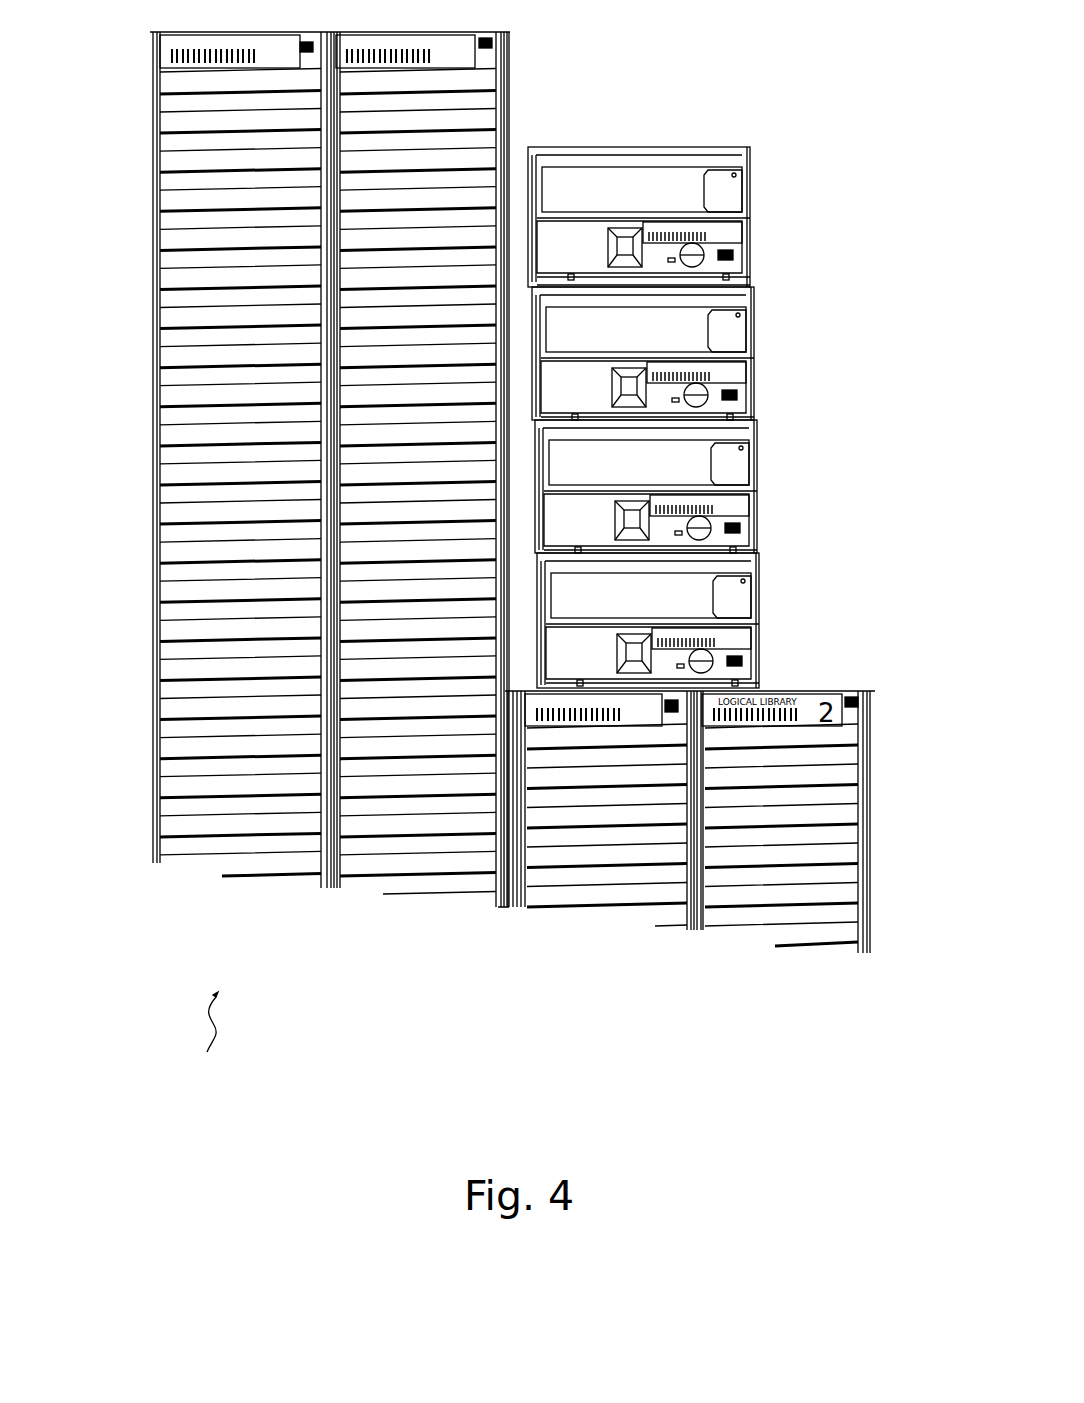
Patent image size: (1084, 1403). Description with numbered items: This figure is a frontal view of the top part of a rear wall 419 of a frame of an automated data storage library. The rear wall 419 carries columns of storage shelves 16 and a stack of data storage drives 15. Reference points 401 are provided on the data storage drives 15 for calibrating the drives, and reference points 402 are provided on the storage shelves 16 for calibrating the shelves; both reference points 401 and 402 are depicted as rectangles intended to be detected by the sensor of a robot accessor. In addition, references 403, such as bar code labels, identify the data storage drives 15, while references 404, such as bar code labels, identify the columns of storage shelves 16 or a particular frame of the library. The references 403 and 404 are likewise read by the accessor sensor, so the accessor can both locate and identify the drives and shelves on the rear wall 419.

The data storage drives 15 is at (676, 147).
The storage shelves 16 is at (157, 558).
The reference points 401 is at (750, 261).
The reference points 402 is at (493, 41).
The references 403 is at (748, 221).
The references 404 is at (803, 688).
The rear wall 419 is at (205, 1039).